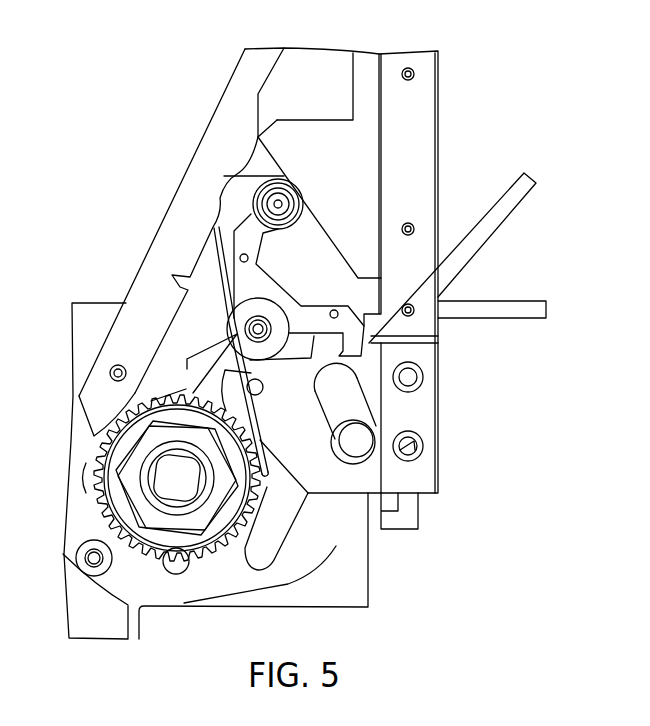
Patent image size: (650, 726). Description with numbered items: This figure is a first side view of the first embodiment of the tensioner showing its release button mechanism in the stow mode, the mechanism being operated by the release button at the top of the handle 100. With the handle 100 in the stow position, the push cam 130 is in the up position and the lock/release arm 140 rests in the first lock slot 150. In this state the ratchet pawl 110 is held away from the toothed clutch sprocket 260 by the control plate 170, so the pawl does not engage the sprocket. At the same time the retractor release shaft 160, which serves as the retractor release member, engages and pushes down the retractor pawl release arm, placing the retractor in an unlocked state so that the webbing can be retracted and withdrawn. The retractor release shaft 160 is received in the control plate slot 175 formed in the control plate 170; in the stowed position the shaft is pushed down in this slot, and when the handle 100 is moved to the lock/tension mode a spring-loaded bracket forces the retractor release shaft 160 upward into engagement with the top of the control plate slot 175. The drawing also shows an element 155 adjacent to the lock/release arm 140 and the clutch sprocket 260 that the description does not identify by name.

The handle 100 is at (417, 108).
The ratchet pawl 110 is at (182, 358).
The push cam 130 is at (358, 170).
The lock/release arm 140 is at (294, 305).
The first lock slot 150 is at (445, 258).
The belt 155 is at (299, 342).
The retractor release shaft 160 is at (353, 442).
The control plate 170 is at (418, 414).
The control plate slot 175 is at (413, 382).
The clutch sprocket 260 is at (97, 480).